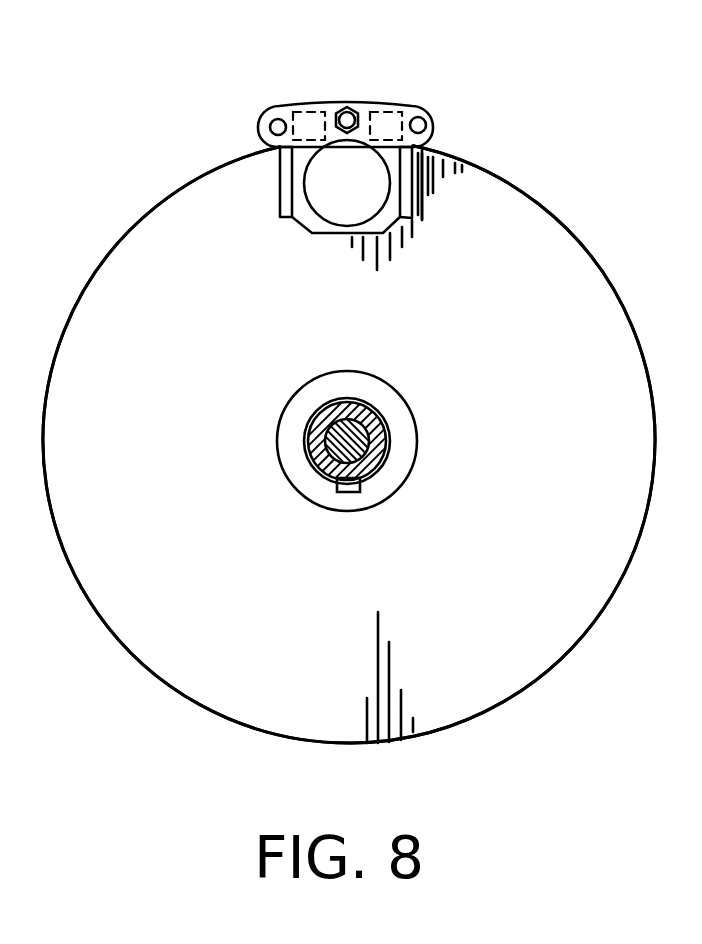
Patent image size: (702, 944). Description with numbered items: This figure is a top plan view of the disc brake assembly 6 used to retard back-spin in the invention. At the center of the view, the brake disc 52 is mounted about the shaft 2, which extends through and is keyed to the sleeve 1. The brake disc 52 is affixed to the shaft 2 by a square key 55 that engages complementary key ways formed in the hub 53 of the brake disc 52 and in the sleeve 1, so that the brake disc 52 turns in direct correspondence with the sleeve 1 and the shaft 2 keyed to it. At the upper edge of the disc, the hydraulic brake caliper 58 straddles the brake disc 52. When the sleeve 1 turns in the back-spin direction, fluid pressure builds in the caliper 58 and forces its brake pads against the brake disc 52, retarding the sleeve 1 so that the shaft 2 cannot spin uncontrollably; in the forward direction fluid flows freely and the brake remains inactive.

The sleeve 1 is at (383, 420).
The shaft 2 is at (337, 408).
The disc brake assembly 6 is at (207, 733).
The brake disc 52 is at (179, 433).
The hub 53 is at (378, 492).
The square key 55 is at (337, 480).
The hydraulic brake caliper 58 is at (350, 108).